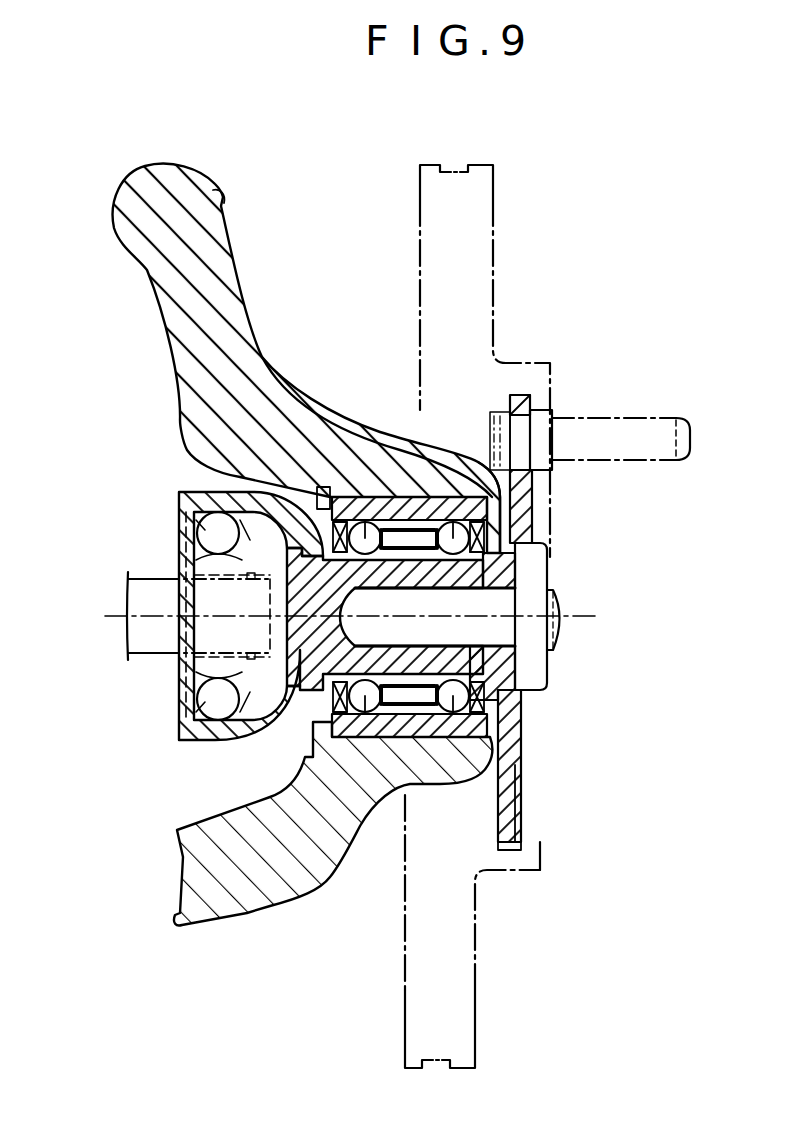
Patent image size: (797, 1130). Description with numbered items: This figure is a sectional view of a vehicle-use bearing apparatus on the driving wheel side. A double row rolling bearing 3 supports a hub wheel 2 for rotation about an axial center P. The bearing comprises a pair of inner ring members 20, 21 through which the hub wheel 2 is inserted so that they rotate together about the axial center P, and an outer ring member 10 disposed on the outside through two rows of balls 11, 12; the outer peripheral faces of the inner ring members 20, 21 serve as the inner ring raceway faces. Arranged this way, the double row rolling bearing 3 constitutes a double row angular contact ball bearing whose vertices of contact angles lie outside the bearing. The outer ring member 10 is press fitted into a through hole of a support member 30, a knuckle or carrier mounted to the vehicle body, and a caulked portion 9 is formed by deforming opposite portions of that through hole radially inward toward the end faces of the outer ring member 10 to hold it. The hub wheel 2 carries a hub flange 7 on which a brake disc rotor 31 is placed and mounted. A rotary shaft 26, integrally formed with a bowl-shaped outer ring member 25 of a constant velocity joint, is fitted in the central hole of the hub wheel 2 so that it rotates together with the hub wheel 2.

The hub wheel 2 is at (500, 660).
The double row rolling bearing 3 is at (405, 490).
The hub flange 7 is at (517, 488).
The caulked portion 9 is at (323, 503).
The outer ring member 10 is at (398, 735).
The balls 11 is at (358, 497).
The balls 12 is at (450, 495).
The inner ring member 20 is at (323, 683).
The inner ring member 21 is at (525, 703).
The bowl-shaped outer ring member 25 is at (212, 728).
The rotary shaft 26 is at (487, 610).
The support member 30 is at (240, 268).
The brake disc rotor 31 is at (476, 943).
The axial center P is at (583, 627).